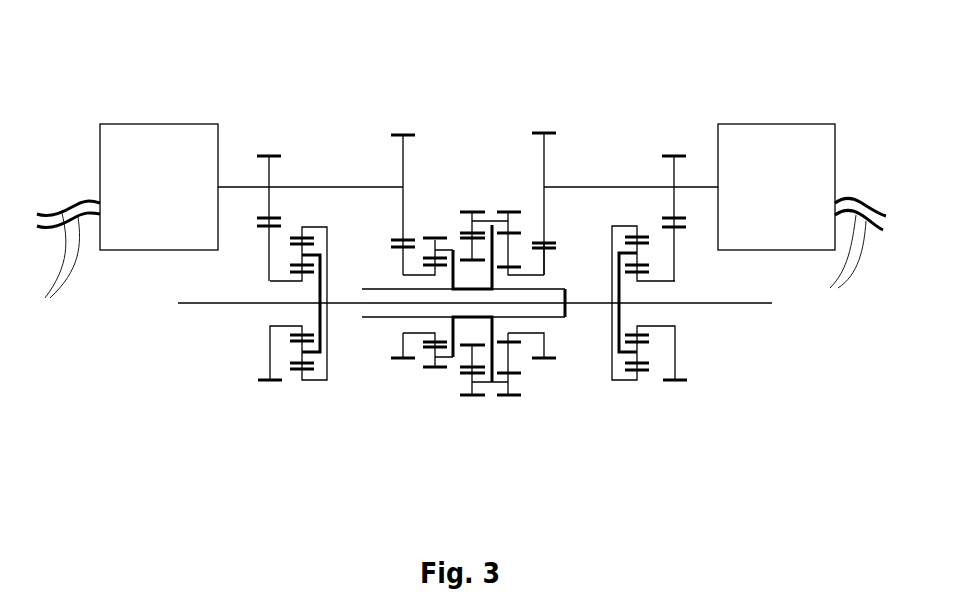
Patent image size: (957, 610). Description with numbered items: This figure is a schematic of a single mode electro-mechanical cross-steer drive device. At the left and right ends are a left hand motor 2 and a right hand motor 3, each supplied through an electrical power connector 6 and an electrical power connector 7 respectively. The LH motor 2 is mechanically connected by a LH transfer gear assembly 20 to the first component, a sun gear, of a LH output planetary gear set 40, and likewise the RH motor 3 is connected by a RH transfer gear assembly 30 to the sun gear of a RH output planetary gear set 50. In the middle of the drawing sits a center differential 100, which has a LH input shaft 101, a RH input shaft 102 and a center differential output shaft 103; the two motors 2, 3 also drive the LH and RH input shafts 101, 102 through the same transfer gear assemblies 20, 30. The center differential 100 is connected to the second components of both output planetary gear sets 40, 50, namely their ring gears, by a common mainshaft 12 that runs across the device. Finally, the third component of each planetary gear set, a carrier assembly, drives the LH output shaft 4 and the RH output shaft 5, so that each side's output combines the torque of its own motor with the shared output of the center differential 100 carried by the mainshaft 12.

The LH motor 2 is at (128, 124).
The RH motor 3 is at (836, 137).
The LH output shaft 4 is at (178, 305).
The RH output shaft 5 is at (764, 305).
The electrical power connector 6 is at (67, 254).
The electrical power connector 7 is at (832, 288).
The mainshaft 12 is at (587, 305).
The LH transfer gear assembly 20 is at (382, 119).
The RH transfer gear assembly 30 is at (670, 139).
The LH output planetary gear set 40 is at (312, 394).
The RH output planetary gear set 50 is at (626, 396).
The center differential 100 is at (475, 356).
The LH input shaft 101 is at (422, 277).
The RH input shaft 102 is at (538, 282).
The center differential output shaft 103 is at (553, 318).